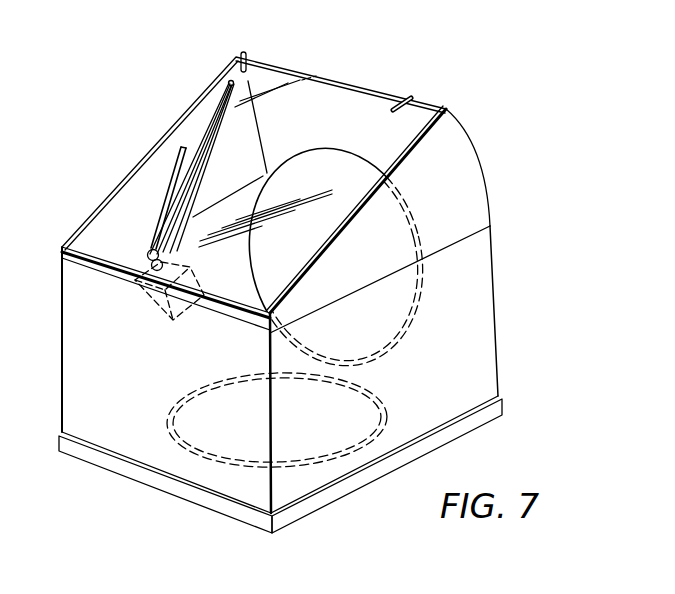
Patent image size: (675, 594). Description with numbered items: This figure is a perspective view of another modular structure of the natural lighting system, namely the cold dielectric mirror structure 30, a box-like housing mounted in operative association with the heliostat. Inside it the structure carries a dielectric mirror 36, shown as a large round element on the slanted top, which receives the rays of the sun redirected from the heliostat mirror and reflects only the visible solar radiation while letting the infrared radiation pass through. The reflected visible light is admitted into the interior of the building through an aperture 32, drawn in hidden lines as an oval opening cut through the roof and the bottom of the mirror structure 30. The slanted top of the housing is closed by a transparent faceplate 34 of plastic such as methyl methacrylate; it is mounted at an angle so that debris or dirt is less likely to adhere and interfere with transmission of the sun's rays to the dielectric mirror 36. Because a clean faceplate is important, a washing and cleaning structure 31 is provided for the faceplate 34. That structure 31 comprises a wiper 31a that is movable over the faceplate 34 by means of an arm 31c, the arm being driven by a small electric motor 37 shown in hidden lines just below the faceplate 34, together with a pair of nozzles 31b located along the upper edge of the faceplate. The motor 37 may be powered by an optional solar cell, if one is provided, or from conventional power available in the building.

The cold dielectric mirror structure 30 is at (518, 168).
The washing and cleaning structure 31 is at (169, 176).
The wiper 31a is at (207, 177).
The nozzles 31b is at (243, 52).
The arm 31c is at (163, 203).
The aperture 32 is at (388, 419).
The transparent faceplate 34 is at (245, 279).
The dielectric mirror 36 is at (337, 157).
The electric motor 37 is at (152, 322).